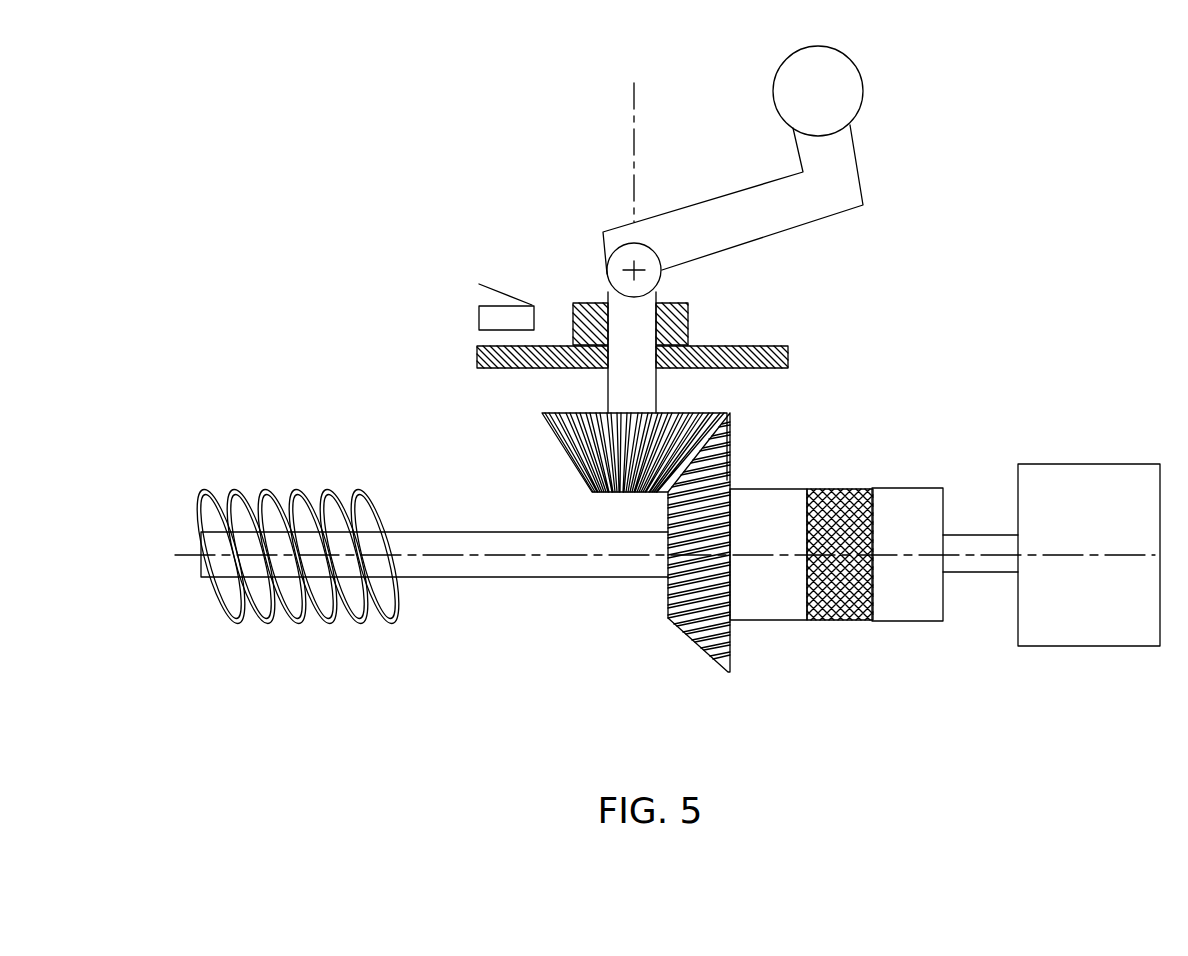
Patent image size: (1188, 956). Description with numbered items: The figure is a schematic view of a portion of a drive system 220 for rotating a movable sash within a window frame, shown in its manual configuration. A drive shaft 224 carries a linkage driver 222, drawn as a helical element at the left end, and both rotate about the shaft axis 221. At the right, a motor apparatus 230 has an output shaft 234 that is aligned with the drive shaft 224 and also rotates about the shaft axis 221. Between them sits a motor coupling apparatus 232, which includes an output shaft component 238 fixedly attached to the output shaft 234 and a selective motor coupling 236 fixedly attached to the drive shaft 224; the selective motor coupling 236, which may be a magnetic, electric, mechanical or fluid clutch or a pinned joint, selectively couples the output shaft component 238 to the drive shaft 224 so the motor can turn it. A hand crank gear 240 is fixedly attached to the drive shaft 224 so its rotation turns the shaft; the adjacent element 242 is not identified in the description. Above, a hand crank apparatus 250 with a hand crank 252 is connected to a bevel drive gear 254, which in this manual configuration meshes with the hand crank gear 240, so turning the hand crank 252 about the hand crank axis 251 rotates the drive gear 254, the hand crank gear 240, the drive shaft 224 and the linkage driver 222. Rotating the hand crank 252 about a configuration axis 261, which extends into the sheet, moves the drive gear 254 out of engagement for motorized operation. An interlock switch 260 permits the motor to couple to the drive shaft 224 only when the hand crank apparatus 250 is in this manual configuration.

The drive system 220 is at (1042, 168).
The shaft axis 221 is at (190, 557).
The linkage driver 222 is at (291, 643).
The drive shaft 224 is at (473, 578).
The motor apparatus 230 is at (1051, 595).
The motor coupling apparatus 232 is at (878, 561).
The output shaft 234 is at (980, 589).
The selective motor coupling 236 is at (838, 489).
The output shaft component 238 is at (910, 488).
The hand crank gear 240 is at (695, 645).
The bearing housing 242 is at (778, 620).
The hand crank apparatus 250 is at (562, 172).
The hand crank axis 251 is at (635, 158).
The hand crank 252 is at (860, 172).
The drive gear 254 is at (563, 452).
The interlock switch 260 is at (479, 317).
The configuration axis 261 is at (627, 278).